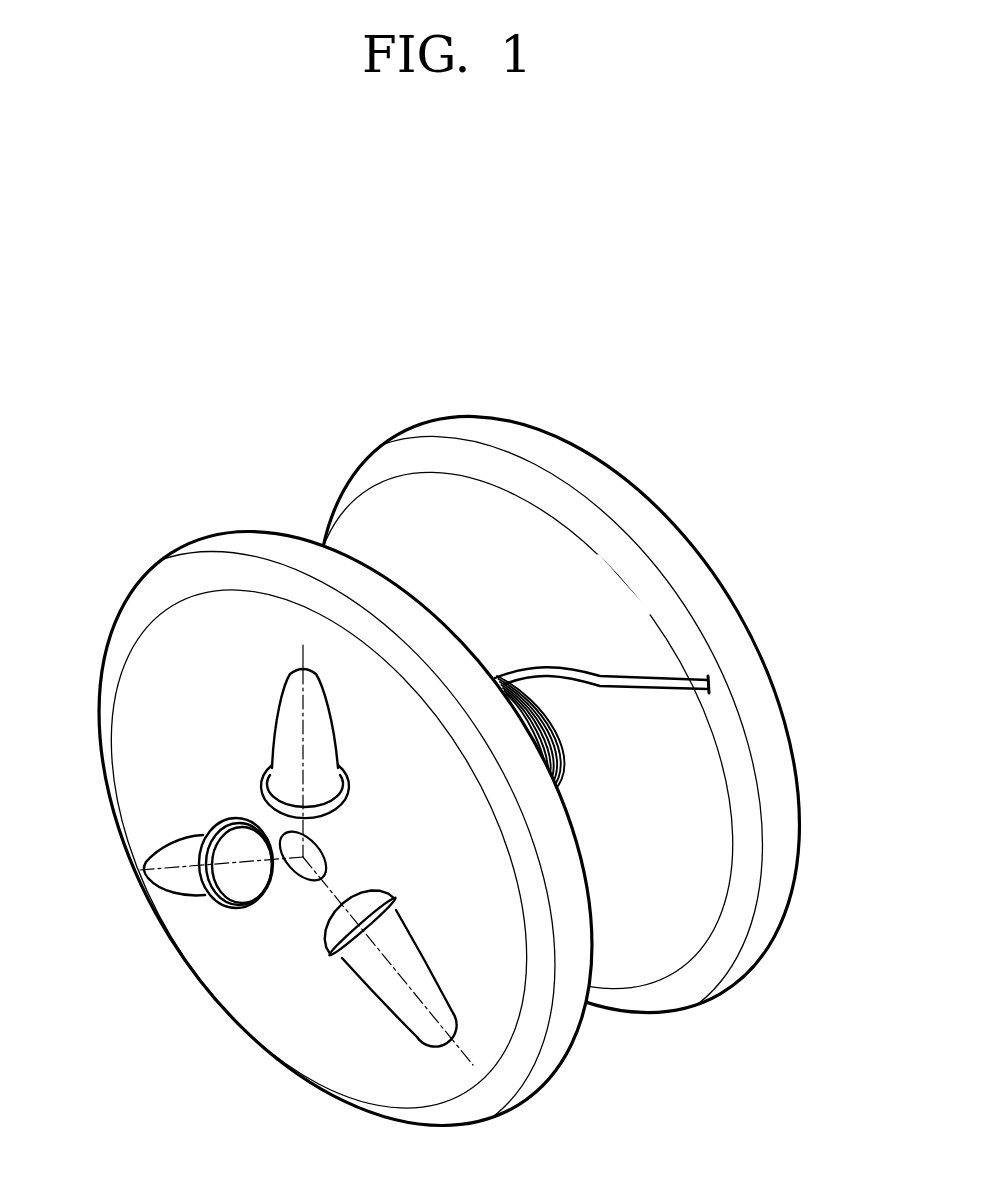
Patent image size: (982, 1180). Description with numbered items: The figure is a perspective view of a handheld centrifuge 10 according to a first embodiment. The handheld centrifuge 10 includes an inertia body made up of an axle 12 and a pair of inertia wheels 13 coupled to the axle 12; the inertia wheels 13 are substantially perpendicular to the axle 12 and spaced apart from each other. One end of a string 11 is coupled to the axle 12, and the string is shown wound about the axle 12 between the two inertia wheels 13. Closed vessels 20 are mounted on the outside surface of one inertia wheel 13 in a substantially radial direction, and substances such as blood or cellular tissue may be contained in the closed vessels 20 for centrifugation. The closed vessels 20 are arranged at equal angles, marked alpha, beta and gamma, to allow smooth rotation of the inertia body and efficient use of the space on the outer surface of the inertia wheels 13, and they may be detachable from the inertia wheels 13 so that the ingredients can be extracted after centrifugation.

The handheld centrifuge 10 is at (683, 420).
The string 11 is at (650, 683).
The axle 12 is at (548, 735).
The inertia wheels 13 is at (700, 977).
The closed vessels 20 is at (282, 752).